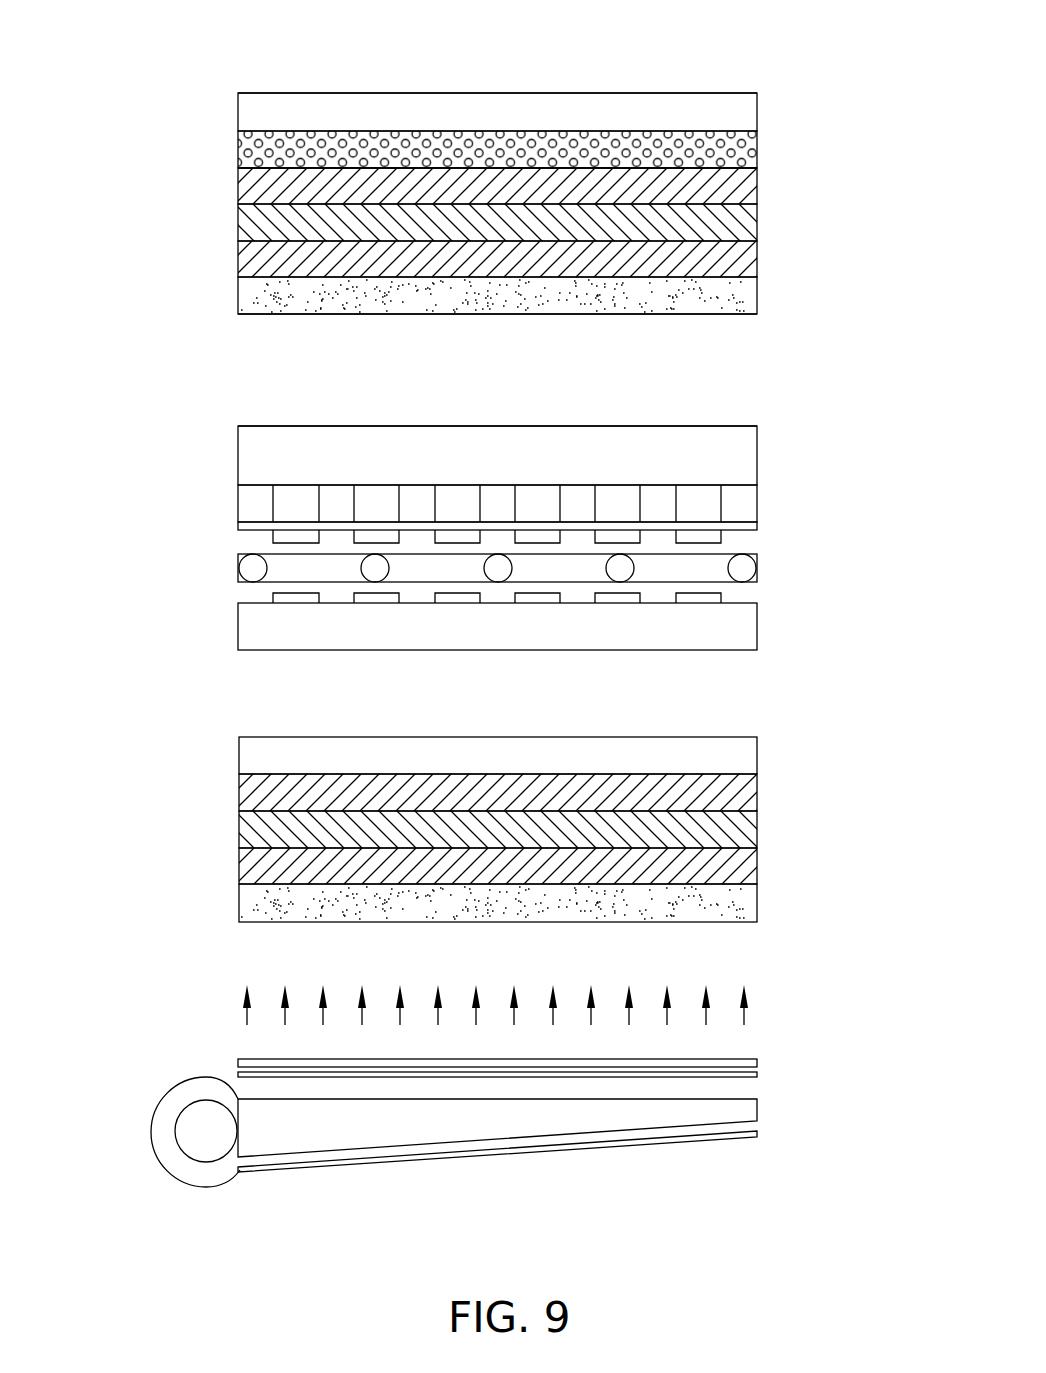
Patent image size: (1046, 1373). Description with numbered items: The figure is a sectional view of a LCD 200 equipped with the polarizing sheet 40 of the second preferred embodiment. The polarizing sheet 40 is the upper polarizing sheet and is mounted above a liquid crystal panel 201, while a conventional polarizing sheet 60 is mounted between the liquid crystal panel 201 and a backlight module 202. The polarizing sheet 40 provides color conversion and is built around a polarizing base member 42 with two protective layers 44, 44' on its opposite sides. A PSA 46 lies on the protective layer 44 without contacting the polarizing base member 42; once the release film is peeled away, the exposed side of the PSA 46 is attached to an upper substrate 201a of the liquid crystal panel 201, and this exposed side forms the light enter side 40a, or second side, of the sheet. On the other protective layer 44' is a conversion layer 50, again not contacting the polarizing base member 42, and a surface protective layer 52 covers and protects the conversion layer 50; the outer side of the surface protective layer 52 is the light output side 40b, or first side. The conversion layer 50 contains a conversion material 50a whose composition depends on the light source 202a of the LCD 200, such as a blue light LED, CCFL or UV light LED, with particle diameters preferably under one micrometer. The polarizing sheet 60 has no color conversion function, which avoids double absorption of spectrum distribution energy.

The LCD 200 is at (122, 114).
The polarizing sheet 40 is at (236, 190).
The light enter side 40a is at (265, 316).
The light output side 40b is at (293, 93).
The surface protective layer 52 is at (740, 106).
The conversion layer 50 is at (761, 137).
The conversion material 50a is at (740, 158).
The protective layer 44' is at (545, 186).
The polarizing base member 42 is at (742, 231).
The protective layer 44 is at (545, 271).
The PSA 46 is at (740, 303).
The liquid crystal panel 201 is at (541, 504).
The upper substrate 201a is at (529, 395).
The polarizing sheet 60 is at (236, 826).
The backlight module 202 is at (462, 1114).
The light source 202a is at (200, 1118).